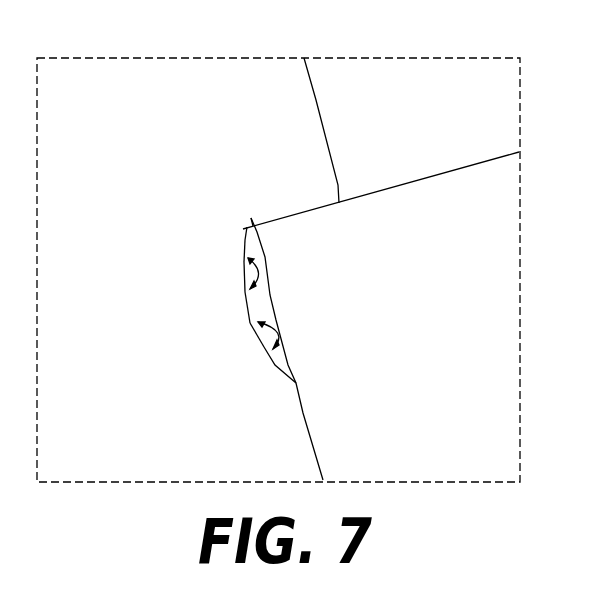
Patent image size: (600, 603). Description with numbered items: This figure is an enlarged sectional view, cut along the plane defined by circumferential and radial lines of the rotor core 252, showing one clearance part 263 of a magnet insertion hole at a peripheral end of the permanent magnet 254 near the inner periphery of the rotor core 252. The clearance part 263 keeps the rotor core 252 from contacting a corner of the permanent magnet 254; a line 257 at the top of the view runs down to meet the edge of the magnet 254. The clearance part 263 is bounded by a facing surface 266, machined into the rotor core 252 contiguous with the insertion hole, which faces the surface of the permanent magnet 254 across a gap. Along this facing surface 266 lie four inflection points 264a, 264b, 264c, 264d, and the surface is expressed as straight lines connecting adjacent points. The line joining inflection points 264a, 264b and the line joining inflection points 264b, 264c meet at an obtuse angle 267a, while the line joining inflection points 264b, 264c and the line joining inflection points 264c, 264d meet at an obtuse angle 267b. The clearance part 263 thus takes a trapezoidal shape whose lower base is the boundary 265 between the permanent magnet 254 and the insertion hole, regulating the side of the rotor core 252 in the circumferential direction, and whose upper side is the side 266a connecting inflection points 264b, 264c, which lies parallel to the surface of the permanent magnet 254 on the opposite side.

The rotor core 252 is at (188, 88).
The boundary line 257 is at (402, 88).
The permanent magnet 254 is at (430, 192).
The clearance part 263 is at (253, 222).
The inflection point 264a is at (250, 226).
The facing surface 266 is at (246, 240).
The inflection point 264b is at (245, 280).
The side 266a is at (247, 310).
The inflection point 264c is at (256, 334).
The inflection point 264d is at (286, 372).
The boundary 265 is at (303, 413).
The obtuse angle 267a is at (260, 273).
The obtuse angle 267b is at (279, 330).